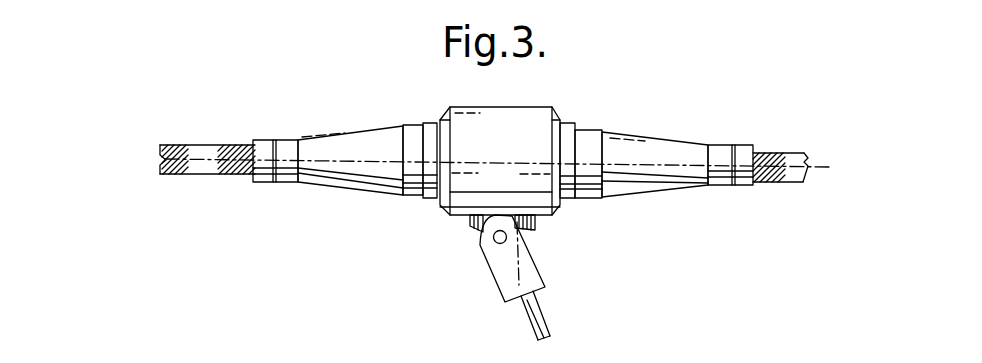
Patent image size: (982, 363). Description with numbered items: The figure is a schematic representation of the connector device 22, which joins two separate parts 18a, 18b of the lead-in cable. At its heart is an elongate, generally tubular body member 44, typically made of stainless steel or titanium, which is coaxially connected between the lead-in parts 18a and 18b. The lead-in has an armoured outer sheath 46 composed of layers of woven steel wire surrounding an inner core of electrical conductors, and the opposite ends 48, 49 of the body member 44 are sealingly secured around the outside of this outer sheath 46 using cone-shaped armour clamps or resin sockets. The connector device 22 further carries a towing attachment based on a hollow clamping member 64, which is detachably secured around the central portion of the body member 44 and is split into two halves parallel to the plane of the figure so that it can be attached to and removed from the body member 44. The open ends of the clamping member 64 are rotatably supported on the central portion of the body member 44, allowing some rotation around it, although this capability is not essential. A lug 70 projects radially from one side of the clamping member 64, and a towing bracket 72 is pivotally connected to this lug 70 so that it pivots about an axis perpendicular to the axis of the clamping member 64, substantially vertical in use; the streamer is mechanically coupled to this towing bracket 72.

The lead-in part 18a is at (198, 177).
The lead-in part 18b is at (790, 183).
The connector device 22 is at (664, 126).
The tubular body member 44 is at (352, 134).
The armoured outer sheath 46 is at (160, 160).
The end of body member 48 is at (266, 146).
The end of body member 49 is at (742, 158).
The clamping member 64 is at (510, 172).
The lug 70 is at (468, 226).
The towing bracket 72 is at (523, 271).